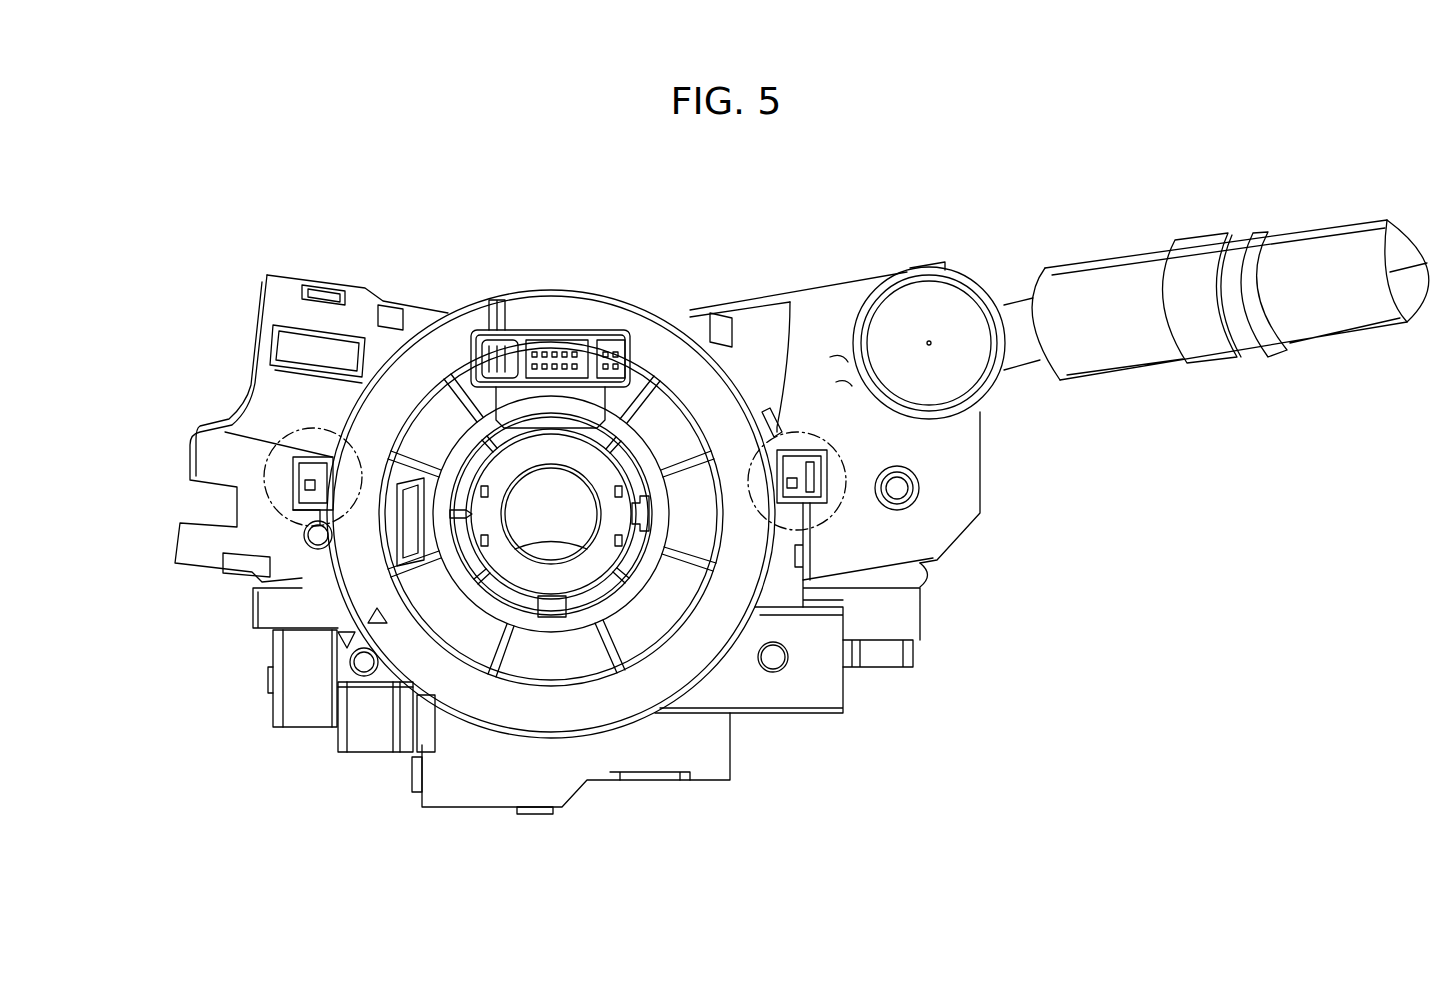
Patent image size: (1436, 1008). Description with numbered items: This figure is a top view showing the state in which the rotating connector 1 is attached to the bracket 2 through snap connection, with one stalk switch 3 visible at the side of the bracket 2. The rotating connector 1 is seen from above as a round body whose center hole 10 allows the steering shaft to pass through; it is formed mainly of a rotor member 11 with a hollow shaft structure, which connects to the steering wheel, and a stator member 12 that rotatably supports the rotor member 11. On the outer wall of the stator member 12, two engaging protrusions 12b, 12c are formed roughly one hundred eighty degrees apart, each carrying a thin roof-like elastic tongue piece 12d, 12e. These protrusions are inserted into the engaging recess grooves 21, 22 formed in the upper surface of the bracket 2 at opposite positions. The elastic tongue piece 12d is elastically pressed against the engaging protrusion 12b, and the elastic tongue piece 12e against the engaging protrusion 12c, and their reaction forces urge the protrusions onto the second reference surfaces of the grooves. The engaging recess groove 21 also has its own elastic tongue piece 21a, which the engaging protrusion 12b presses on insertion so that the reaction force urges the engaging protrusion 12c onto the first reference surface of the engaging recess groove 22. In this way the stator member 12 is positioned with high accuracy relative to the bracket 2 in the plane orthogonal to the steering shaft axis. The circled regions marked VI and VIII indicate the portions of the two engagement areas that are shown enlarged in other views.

The rotating connector 1 is at (592, 282).
The bracket 2 is at (288, 265).
The stalk switch 3 is at (1100, 285).
The center hole 10 is at (513, 550).
The rotor member 11 is at (577, 717).
The stator member 12 is at (772, 688).
The engaging protrusion 12b is at (812, 487).
The engaging protrusion 12c is at (300, 495).
The elastic tongue piece 12d is at (800, 452).
The elastic tongue piece 12e is at (300, 468).
The engaging recess groove 21 is at (805, 455).
The elastic tongue piece 21a is at (815, 482).
The engaging recess groove 22 is at (345, 540).
The section VI is at (287, 437).
The section VIII is at (847, 468).